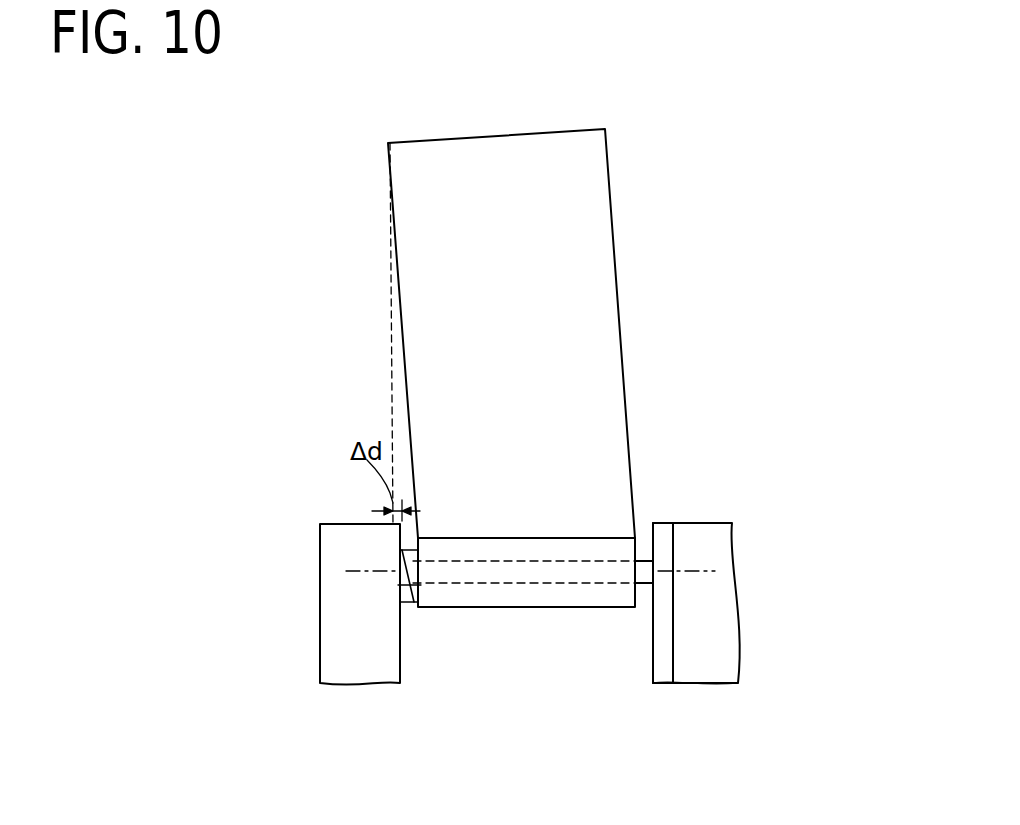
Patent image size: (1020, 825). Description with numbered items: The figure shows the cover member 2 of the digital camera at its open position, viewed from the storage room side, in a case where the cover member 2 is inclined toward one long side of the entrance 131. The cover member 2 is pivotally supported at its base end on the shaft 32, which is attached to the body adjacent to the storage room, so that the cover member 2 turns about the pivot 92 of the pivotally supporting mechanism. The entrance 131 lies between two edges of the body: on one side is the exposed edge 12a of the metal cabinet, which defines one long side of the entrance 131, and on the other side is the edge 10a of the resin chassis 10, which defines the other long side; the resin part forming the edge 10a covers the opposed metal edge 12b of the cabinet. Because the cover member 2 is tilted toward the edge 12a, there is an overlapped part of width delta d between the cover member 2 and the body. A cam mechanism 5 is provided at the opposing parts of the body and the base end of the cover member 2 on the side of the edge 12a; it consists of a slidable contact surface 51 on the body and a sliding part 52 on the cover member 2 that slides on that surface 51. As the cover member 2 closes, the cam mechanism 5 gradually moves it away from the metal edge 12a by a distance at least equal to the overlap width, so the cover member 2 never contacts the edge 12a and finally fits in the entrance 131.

The cover member 2 is at (620, 316).
The shaft 32 is at (525, 608).
The entrance 131 is at (643, 533).
The chassis 10 is at (663, 670).
The edge 10a is at (652, 525).
The metal edge 12b is at (674, 524).
The edge 12a is at (398, 526).
The pivot 92 is at (362, 574).
The cam mechanism 5 is at (439, 649).
The slidable contact surface 51 is at (406, 603).
The sliding part 52 is at (413, 563).